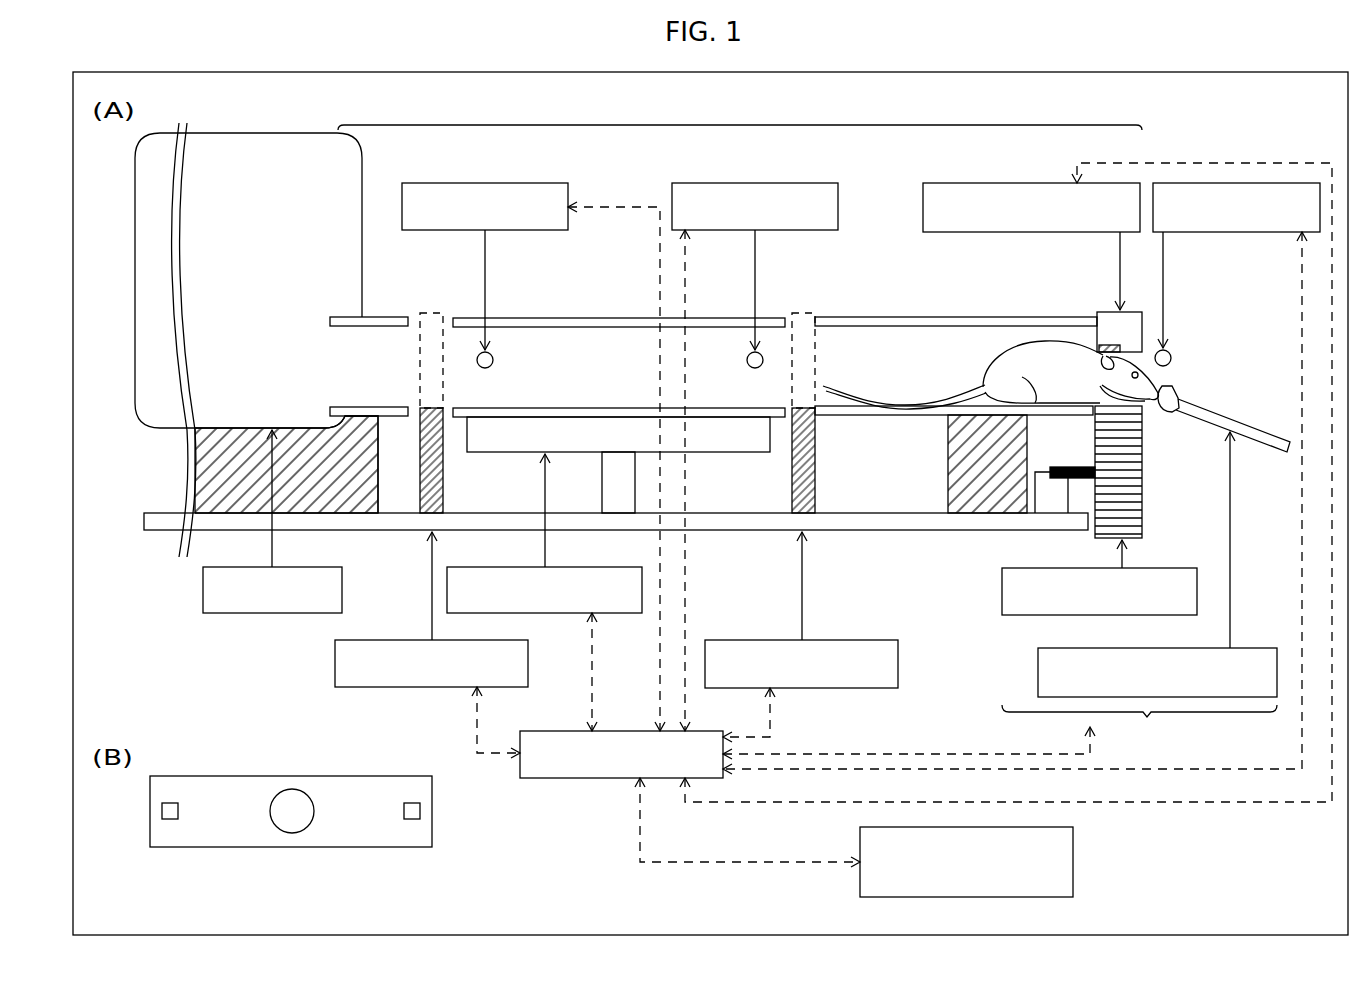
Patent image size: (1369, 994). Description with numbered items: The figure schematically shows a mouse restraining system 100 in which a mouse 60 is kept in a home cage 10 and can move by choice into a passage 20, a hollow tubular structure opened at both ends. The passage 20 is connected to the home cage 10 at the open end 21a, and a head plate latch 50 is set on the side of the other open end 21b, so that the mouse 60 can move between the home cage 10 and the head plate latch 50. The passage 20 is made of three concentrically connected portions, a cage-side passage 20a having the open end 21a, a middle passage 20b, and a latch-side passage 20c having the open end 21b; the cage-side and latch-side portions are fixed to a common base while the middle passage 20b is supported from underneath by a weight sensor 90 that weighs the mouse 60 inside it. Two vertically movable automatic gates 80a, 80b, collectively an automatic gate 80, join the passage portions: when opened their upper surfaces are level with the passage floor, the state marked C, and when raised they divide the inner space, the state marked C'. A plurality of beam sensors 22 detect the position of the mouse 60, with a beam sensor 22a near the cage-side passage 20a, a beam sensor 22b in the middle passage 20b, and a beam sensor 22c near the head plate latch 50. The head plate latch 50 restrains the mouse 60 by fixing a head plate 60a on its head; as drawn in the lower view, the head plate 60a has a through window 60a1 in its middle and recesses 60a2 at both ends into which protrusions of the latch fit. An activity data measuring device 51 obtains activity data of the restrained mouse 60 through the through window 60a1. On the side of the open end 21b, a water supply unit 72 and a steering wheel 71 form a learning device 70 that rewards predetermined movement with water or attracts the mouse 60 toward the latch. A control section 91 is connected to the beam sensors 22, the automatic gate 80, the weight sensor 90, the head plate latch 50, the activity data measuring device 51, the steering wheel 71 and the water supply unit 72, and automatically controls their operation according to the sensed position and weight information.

The mouse restraining system 100 is at (1276, 136).
The home cage 10 is at (272, 613).
The passage 20 is at (748, 120).
The cage-side passage 20a is at (398, 317).
The middle passage 20b is at (580, 317).
The latch-side passage 20c is at (870, 317).
The open end (first open end) 21a is at (328, 351).
The open end (second open end) 21b is at (1182, 362).
The beam sensors 22 is at (861, 261).
The beam sensor 22a is at (518, 183).
The beam sensor 22b is at (788, 183).
The beam sensor 22c is at (1217, 235).
The head plate latch 50 is at (947, 232).
The activity data measuring device 51 is at (1073, 858).
The mouse 60 is at (1003, 367).
The head plate 60a is at (1113, 340).
The through window 60a1 is at (292, 833).
The recesses 60a2 is at (162, 811).
The learning device 70 is at (1006, 571).
The steering wheel 71 is at (1015, 615).
The water supply unit 72 is at (1262, 648).
The automatic gate 80 is at (615, 644).
The automatic gate 80a is at (378, 687).
The automatic gate 80b is at (850, 688).
The weight sensor 90 is at (623, 613).
The control section 91 is at (580, 778).
The open state of automatic gate C is at (638, 460).
The closed state of automatic gate C' is at (617, 333).